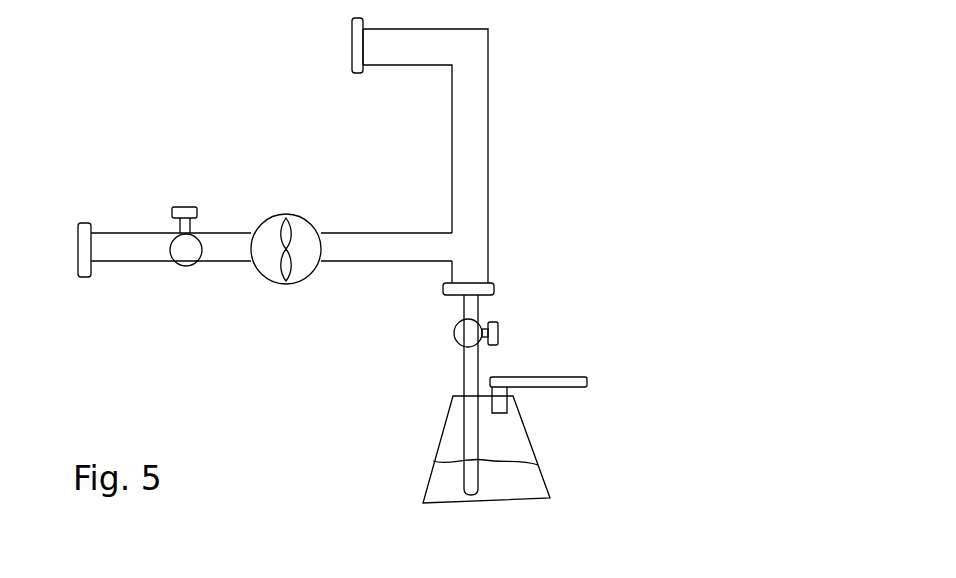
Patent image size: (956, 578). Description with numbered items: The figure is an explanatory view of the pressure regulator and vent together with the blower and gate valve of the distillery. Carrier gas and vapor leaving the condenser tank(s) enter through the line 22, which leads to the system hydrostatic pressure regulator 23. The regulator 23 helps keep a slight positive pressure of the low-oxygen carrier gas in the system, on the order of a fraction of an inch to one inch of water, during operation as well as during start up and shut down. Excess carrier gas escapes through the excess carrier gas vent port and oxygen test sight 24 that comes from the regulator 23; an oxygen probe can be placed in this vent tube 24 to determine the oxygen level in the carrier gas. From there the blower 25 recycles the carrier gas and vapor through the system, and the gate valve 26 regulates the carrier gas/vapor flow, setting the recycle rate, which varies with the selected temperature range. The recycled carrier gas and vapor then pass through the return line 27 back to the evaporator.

The line receiving carrier gas and vapor from the condenser tank(s) 22 is at (492, 100).
The system hydrostatic pressure regulator 23 is at (563, 448).
The excess carrier gas vent port and oxygen test sight 24 is at (565, 377).
The blower to recycle carrier gas and vapor through the system 25 is at (292, 290).
The gate valve to regulate carrier gas/vapor flow 26 is at (172, 205).
The carrier gas/vapor return line to evaporator 27 is at (85, 280).